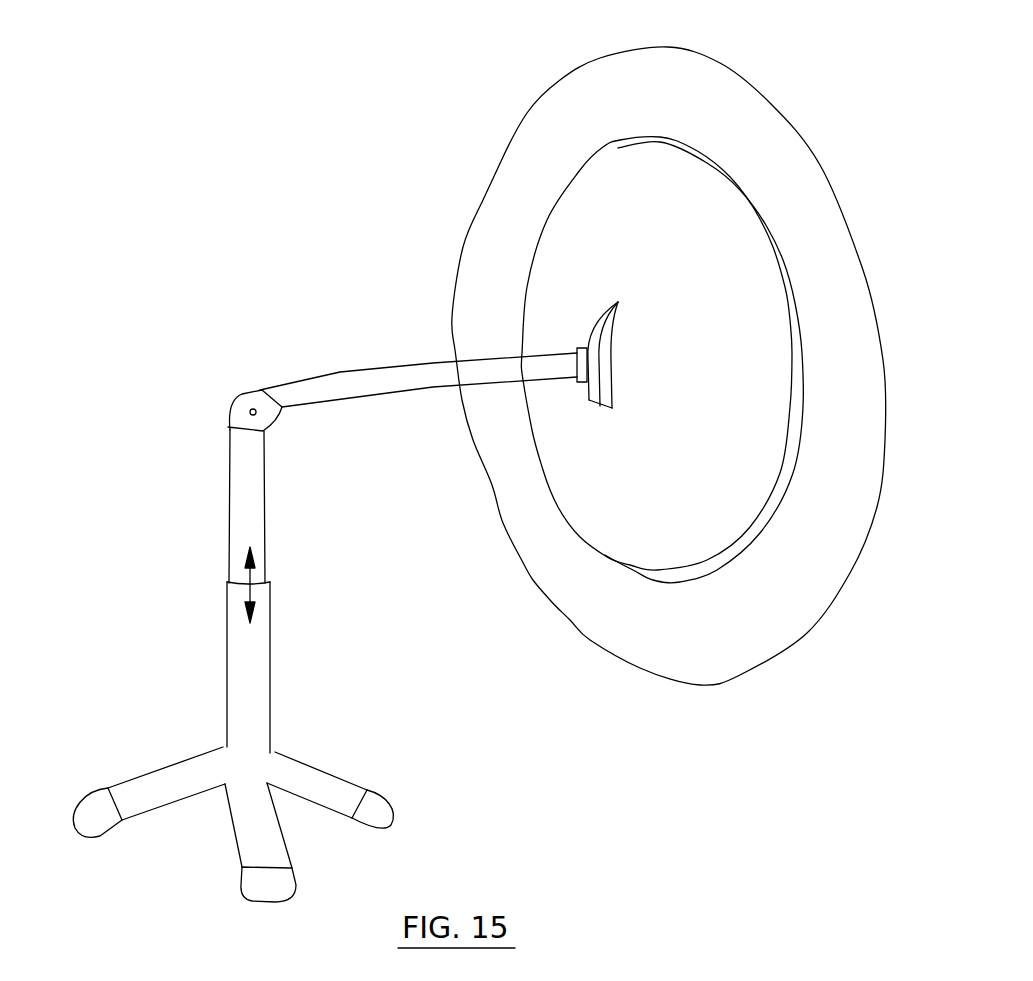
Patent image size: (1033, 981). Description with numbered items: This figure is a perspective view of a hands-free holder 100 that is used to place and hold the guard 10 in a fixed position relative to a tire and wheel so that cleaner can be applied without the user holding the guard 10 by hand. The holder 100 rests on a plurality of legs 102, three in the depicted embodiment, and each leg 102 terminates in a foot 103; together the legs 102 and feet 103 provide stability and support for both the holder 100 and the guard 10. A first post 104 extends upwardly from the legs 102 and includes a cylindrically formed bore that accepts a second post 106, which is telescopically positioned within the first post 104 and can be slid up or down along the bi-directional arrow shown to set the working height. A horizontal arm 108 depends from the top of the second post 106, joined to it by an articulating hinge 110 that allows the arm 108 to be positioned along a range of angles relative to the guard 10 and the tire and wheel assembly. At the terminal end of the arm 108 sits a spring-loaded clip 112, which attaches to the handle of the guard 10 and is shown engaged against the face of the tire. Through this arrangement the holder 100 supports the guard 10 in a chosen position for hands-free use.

The guard 10 is at (596, 142).
The hands-free holder 100 is at (147, 423).
The legs 102 is at (150, 772).
The foot 103 is at (98, 818).
The first post 104 is at (222, 658).
The second post 106 is at (272, 503).
The horizontal arm 108 is at (341, 371).
The articulating hinge 110 is at (235, 394).
The spring-loaded clip 112 is at (574, 390).